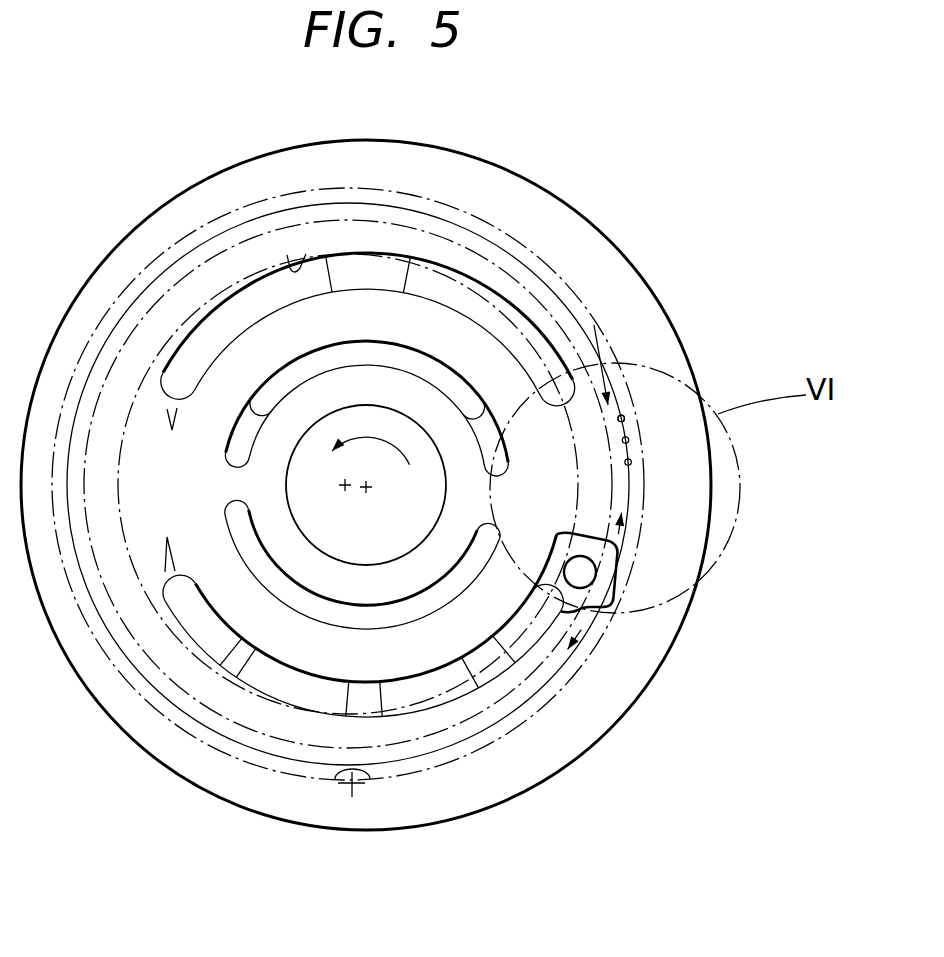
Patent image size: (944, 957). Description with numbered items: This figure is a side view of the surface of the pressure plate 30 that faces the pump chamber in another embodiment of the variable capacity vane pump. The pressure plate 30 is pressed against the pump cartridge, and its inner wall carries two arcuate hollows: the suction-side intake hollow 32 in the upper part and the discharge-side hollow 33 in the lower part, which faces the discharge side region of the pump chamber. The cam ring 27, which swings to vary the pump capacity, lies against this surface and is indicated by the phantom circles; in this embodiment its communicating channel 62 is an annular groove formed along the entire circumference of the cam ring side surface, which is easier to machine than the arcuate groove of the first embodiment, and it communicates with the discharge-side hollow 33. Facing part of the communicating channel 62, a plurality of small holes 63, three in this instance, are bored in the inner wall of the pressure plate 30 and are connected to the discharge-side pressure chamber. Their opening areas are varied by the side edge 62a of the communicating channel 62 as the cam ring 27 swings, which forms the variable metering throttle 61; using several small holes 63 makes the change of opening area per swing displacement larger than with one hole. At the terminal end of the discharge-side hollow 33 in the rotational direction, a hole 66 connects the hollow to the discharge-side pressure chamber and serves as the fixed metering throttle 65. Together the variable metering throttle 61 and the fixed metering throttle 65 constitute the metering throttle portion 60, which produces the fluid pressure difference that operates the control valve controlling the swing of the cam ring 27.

The cam ring 27 is at (405, 193).
The pressure plate 30 is at (527, 197).
The suction-side intake hollow 32 is at (288, 262).
The discharge-side hollow 33 is at (243, 668).
The metering throttle portion 60 is at (683, 516).
The variable metering throttle 61 is at (583, 362).
The communicating channel 62 is at (596, 358).
The side edge of the communicating channel 62a is at (630, 410).
The small holes 63 is at (631, 463).
The fixed metering throttle 65 is at (600, 580).
The hole 66 is at (600, 598).